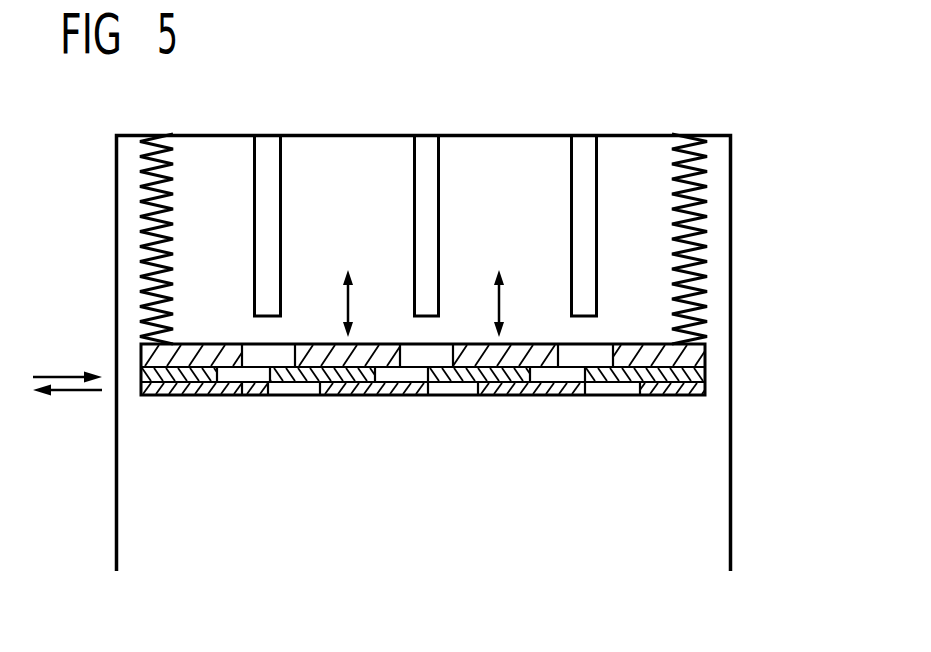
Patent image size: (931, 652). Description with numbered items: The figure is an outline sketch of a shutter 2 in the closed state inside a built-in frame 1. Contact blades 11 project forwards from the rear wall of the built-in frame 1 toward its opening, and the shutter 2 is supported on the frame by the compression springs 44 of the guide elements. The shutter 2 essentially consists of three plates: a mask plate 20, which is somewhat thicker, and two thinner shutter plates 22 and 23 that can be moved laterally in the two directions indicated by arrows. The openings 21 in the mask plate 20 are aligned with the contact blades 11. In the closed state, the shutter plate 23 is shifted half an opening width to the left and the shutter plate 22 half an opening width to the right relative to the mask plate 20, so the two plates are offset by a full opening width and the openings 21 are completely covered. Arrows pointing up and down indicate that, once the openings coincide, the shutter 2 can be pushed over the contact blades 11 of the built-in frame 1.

The built-in frame 1 is at (732, 502).
The shutter 2 is at (772, 386).
The contact blades 11 is at (268, 135).
The mask plate 20 is at (470, 358).
The openings 21 is at (254, 352).
The shutter plate 22 is at (535, 395).
The shutter plate 23 is at (615, 373).
The compression springs 44 is at (145, 210).